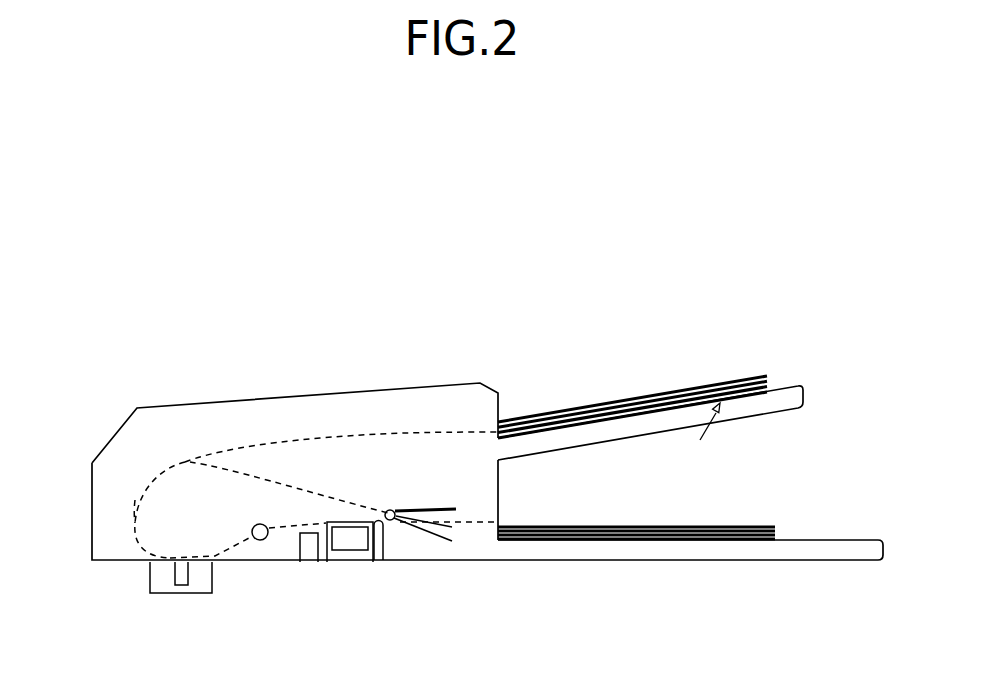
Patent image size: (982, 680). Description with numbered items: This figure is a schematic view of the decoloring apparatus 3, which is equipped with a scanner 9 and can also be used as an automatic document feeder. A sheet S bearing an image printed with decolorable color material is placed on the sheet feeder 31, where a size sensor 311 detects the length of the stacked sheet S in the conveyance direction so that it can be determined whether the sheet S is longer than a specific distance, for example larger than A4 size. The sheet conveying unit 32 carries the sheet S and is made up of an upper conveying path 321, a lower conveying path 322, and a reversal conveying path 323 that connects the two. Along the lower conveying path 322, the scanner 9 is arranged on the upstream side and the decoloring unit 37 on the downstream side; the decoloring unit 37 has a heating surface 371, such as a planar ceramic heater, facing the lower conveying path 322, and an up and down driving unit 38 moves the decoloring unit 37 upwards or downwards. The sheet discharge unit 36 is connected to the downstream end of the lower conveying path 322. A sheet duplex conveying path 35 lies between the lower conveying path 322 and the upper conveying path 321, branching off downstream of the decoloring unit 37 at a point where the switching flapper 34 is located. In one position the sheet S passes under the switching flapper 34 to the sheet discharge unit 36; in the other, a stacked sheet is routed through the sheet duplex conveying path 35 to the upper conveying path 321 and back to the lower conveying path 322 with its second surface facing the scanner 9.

The decoloring apparatus 3 is at (883, 327).
The sheet S is at (727, 381).
The sheet feeder 31 is at (746, 415).
The size sensor 311 is at (702, 434).
The sheet conveying unit 32 is at (237, 446).
The upper conveying path 321 is at (267, 443).
The lower conveying path 322 is at (266, 539).
The reversal conveying path 323 is at (132, 523).
The switching flapper 34 is at (418, 509).
The sheet duplex conveying path 35 is at (328, 497).
The sheet discharge unit 36 is at (822, 538).
The decoloring unit 37 is at (343, 562).
The heating surface 371 is at (373, 560).
The up and down driving unit 38 is at (305, 557).
The scanner 9 is at (177, 596).